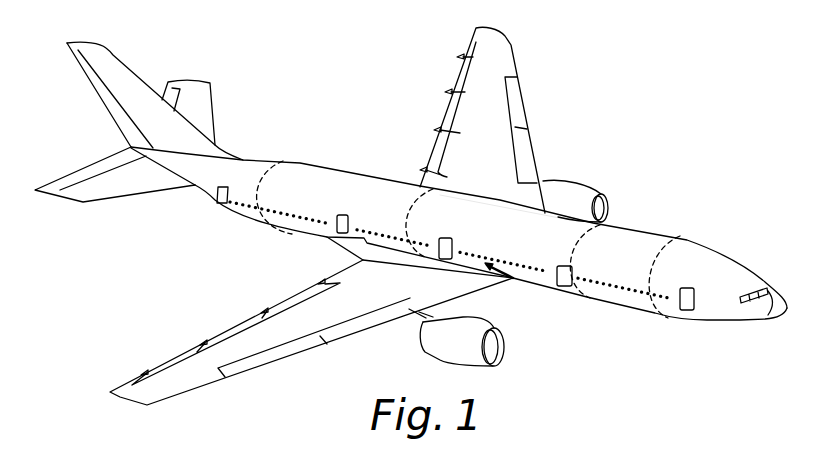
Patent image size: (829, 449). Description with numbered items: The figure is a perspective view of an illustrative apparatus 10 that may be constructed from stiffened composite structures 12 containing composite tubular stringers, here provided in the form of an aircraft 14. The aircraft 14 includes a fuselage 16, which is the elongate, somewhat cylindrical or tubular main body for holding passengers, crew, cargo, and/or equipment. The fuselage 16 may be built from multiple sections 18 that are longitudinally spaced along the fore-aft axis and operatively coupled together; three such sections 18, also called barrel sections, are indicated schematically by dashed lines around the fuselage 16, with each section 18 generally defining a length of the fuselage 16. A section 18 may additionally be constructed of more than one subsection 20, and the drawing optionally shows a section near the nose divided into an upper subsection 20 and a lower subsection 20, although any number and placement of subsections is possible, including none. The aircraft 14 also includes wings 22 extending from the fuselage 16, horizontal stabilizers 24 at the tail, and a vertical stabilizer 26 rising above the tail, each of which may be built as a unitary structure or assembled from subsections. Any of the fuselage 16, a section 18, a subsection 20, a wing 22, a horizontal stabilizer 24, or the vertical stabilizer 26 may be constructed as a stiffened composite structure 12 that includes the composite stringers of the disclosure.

The apparatus 10 is at (724, 143).
The stiffened composite structure 12 is at (361, 74).
The aircraft 14 is at (678, 99).
The fuselage 16 is at (571, 210).
The fuselage section 18 is at (288, 233).
The subsection 20 is at (680, 236).
The wing 22 is at (515, 58).
The horizontal stabilizer 24 is at (216, 115).
The vertical stabilizer 26 is at (137, 67).